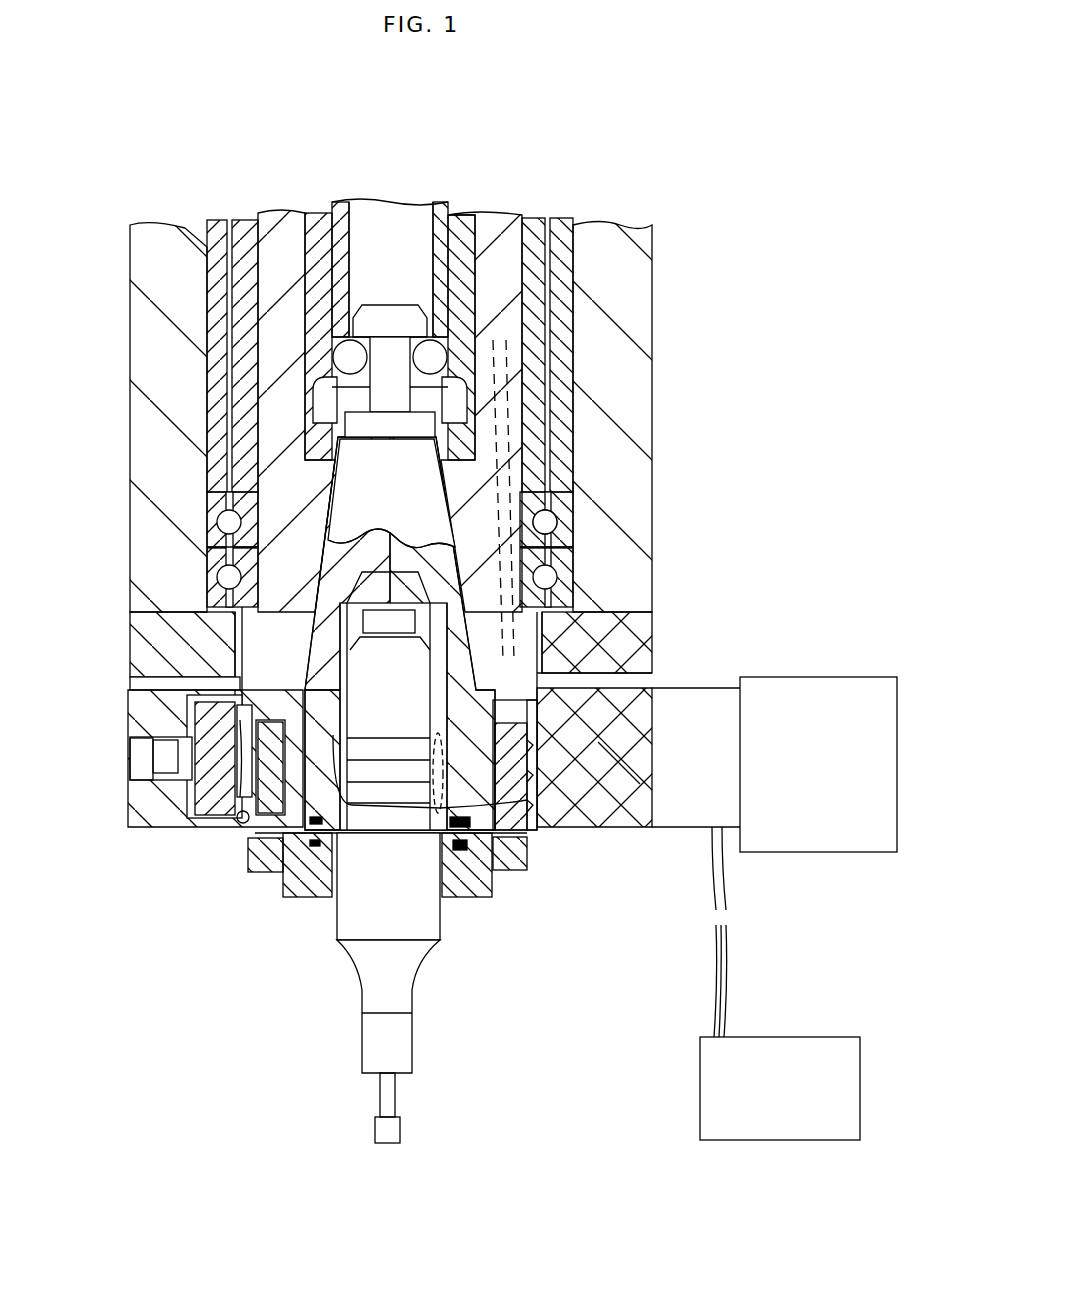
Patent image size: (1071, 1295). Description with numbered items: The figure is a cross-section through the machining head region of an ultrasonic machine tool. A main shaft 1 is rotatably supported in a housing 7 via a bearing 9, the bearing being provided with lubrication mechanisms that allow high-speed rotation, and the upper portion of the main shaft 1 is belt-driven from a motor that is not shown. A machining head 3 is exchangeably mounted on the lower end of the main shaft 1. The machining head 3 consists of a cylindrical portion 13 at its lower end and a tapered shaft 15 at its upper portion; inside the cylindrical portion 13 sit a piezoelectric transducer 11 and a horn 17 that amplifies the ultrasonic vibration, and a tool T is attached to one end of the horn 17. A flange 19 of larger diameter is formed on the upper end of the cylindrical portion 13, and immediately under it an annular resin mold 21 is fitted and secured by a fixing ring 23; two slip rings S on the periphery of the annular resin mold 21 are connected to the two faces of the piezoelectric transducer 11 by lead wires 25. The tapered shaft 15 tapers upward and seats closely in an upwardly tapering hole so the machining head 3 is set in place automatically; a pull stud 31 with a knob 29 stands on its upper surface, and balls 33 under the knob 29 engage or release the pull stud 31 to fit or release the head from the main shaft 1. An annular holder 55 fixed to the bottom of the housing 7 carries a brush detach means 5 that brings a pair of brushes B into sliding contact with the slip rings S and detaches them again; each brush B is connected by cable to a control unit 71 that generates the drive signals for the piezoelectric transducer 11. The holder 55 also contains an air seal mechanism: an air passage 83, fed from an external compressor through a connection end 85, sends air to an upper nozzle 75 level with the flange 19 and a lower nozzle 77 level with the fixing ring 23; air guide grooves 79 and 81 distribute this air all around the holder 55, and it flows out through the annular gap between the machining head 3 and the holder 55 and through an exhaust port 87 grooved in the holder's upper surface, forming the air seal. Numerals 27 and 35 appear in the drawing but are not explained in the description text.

The main shaft 1 is at (506, 261).
The machining head 3 is at (322, 915).
The brush detach means 5 is at (779, 666).
The housing 7 is at (613, 355).
The bearing 9 is at (603, 470).
The piezoelectric transducer 11 is at (400, 800).
The cylindrical portion 13 is at (470, 855).
The tapered shaft 15 is at (455, 596).
The horn 17 is at (387, 903).
The flange 19 is at (462, 632).
The annular resin mold 21 is at (533, 690).
The fixing ring 23 is at (490, 832).
The lead wires 25 is at (458, 862).
The bearing outer race 27 is at (453, 542).
The knob 29 is at (400, 323).
The pull stud 31 is at (382, 367).
The balls 33 is at (343, 353).
The passage 35 is at (545, 340).
The annular holder 55 is at (158, 828).
The control unit 71 is at (800, 1037).
The nozzle 75 is at (203, 718).
The nozzle 77 is at (208, 828).
The air guide groove 79 is at (245, 657).
The air guide groove 81 is at (238, 828).
The air passage 83 is at (135, 752).
The connection end 85 is at (195, 700).
The exhaust port 87 is at (242, 648).
The brushes B is at (644, 787).
The slip rings S is at (192, 812).
The tool T is at (400, 1133).